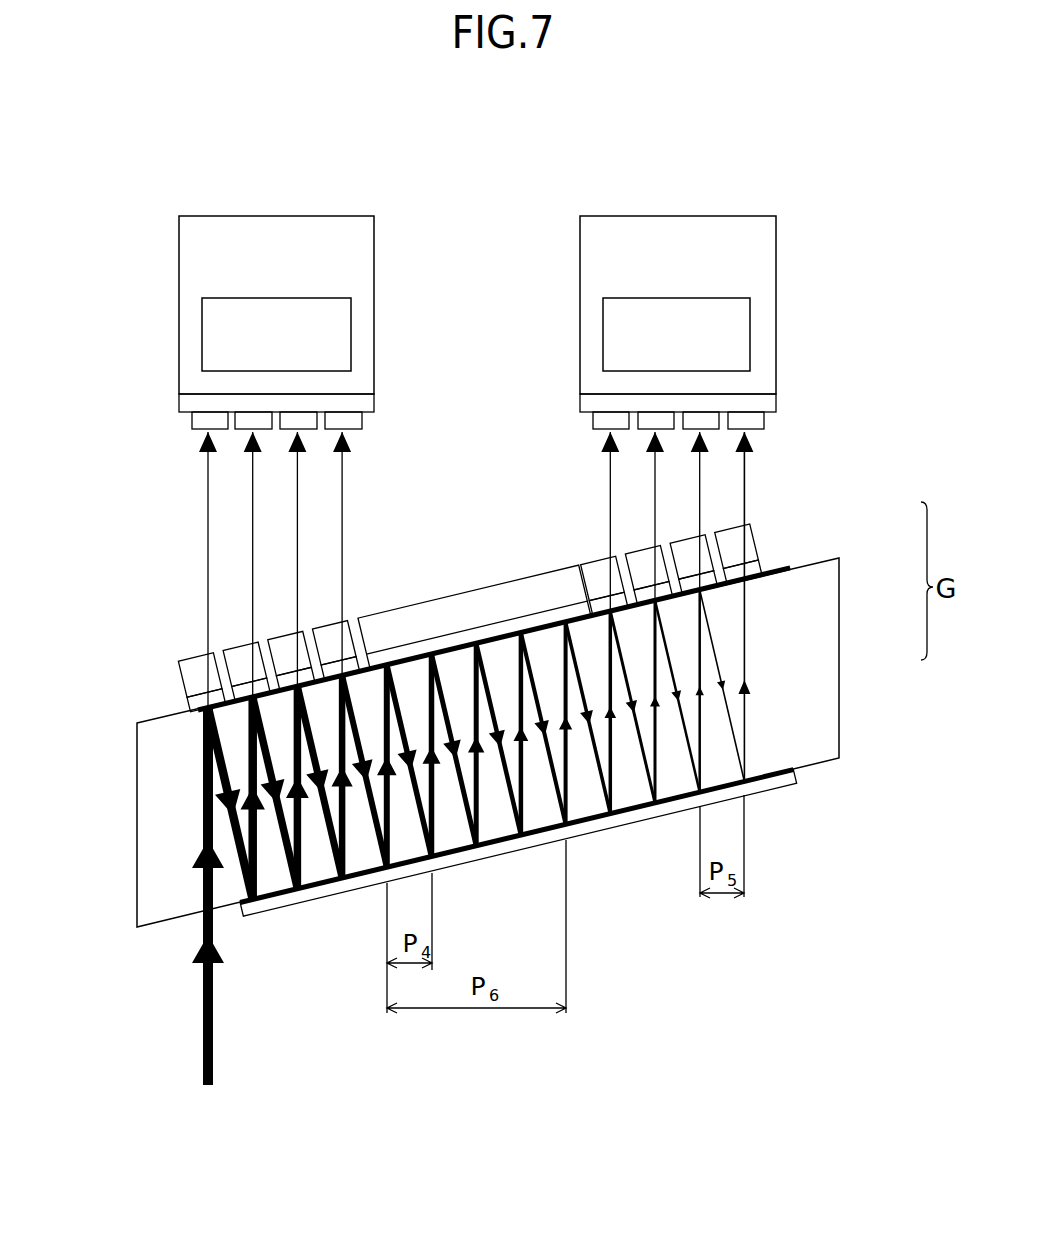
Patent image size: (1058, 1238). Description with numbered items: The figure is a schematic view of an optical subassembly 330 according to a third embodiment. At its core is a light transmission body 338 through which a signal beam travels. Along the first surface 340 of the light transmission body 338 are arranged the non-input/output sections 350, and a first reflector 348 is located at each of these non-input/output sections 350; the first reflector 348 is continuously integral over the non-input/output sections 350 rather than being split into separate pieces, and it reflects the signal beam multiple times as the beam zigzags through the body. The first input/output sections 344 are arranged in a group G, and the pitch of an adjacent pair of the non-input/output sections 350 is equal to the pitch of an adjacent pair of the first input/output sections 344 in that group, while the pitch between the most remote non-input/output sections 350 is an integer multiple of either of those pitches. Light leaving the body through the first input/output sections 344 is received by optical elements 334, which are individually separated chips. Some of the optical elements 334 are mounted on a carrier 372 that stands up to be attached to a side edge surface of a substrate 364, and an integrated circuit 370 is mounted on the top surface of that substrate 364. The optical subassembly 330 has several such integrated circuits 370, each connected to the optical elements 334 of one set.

The optical subassembly 330 is at (158, 552).
The optical elements 334 is at (190, 424).
The light transmission body 338 is at (137, 852).
The first surface 340 is at (172, 712).
The first input/output sections 344 is at (607, 610).
The first reflector 348 is at (457, 632).
The non-input/output sections 350 is at (387, 664).
The substrate 364 is at (338, 215).
The integrated circuit 370 is at (277, 297).
The carrier 372 is at (179, 398).